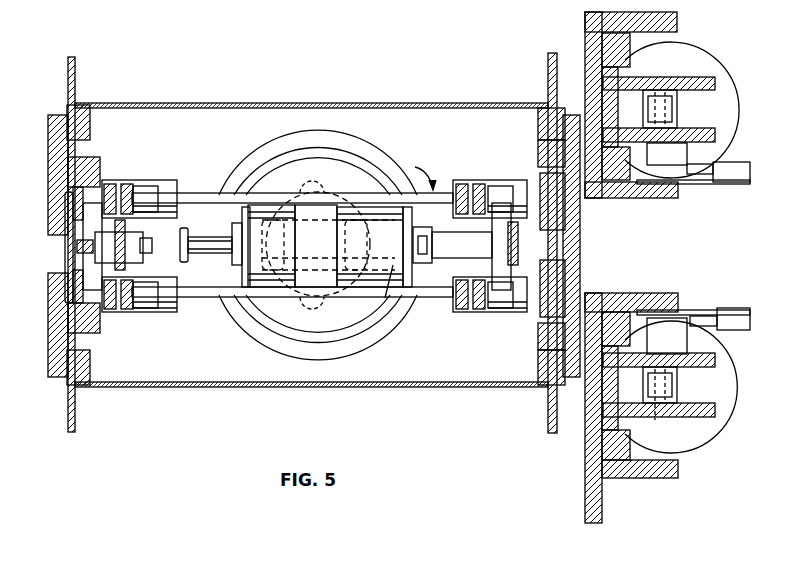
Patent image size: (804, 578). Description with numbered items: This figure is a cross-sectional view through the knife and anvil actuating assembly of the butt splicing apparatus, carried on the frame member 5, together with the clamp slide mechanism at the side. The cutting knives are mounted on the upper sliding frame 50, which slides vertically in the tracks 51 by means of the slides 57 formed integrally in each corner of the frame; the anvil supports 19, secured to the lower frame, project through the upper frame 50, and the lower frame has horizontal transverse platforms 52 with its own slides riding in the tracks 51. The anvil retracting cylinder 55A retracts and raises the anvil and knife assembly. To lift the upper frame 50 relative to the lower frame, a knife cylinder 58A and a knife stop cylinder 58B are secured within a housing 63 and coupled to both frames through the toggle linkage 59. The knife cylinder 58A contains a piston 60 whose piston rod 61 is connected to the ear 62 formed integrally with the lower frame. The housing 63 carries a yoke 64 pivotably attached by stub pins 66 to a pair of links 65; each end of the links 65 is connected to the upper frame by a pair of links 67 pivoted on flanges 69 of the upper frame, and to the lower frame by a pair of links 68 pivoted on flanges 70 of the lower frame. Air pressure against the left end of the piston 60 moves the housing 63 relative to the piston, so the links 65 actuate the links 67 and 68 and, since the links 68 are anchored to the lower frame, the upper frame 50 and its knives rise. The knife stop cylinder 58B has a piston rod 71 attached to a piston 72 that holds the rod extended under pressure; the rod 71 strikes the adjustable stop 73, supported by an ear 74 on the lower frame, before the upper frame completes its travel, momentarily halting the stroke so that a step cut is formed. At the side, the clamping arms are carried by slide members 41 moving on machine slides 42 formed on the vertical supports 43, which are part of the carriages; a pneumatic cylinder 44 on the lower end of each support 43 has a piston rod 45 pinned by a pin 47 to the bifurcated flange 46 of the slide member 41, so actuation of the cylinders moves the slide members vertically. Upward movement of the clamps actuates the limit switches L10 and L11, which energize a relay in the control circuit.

The frame member 5 is at (68, 64).
The anvil support 19 is at (110, 252).
The slide member 41 is at (616, 93).
The machine slide 42 is at (628, 52).
The vertical support 43 is at (677, 24).
The pneumatic cylinder 44 is at (720, 95).
The piston rod 45 is at (672, 103).
The bifurcated flange 46 is at (690, 84).
The pin 47 is at (672, 114).
The upper sliding frame 50 is at (78, 285).
The track 51 is at (98, 170).
The horizontal transverse platform 52 is at (368, 156).
The anvil retracting cylinder 55A is at (355, 298).
The slide 57 is at (60, 187).
The knife cylinder 58A is at (385, 300).
The knife stop cylinder 58B is at (282, 246).
The toggle linkage 59 is at (421, 170).
The piston 60 is at (348, 222).
The piston rod 61 is at (425, 252).
The ear 62 is at (518, 246).
The housing 63 is at (262, 210).
The yoke 64 is at (328, 210).
The link 65 is at (388, 205).
The stub pin 66 is at (310, 194).
The link 67 is at (490, 186).
The link 68 is at (503, 186).
The flange 69 is at (130, 196).
The flange 70 is at (95, 240).
The piston rod 71 is at (205, 248).
The piston 72 is at (328, 255).
The adjustable stop 73 is at (150, 248).
The ear 74 is at (125, 258).
The limit switch L10 is at (733, 182).
The limit switch L11 is at (740, 310).